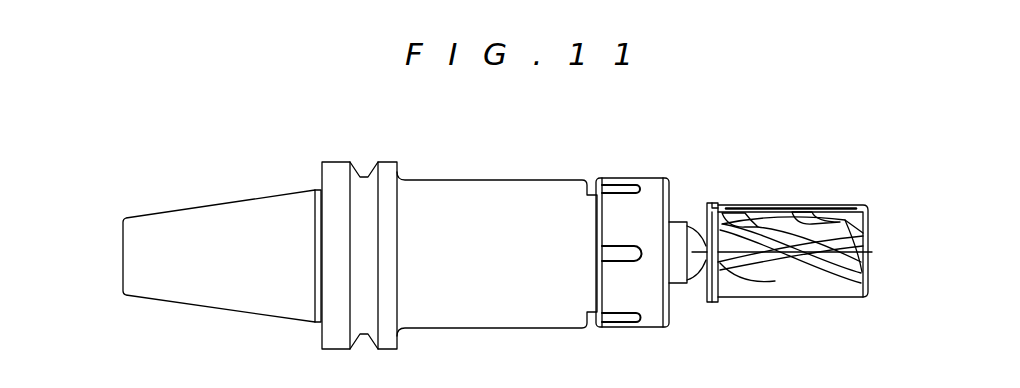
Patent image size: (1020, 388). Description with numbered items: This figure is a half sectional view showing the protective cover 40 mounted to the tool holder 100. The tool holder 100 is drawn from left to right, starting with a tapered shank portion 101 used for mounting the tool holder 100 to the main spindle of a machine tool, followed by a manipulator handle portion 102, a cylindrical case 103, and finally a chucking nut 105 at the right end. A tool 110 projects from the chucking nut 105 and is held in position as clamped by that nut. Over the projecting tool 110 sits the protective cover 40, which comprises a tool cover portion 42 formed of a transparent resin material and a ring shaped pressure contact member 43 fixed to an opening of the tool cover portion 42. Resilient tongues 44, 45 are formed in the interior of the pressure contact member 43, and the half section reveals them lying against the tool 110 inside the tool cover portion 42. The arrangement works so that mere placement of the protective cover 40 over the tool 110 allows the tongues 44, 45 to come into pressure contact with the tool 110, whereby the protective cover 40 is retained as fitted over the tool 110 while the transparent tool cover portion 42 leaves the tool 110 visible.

The tool holder 100 is at (334, 151).
The tapered shank portion 101 is at (233, 218).
The manipulator handle portion 102 is at (382, 167).
The cylindrical case 103 is at (487, 185).
The chucking nut 105 is at (643, 180).
The protective cover 40 is at (785, 302).
The tool cover portion 42 is at (838, 205).
The pressure contact member 43 is at (713, 302).
The resilient tongue 44 is at (743, 225).
The resilient tongue 45 is at (807, 212).
The tool 110 is at (832, 268).